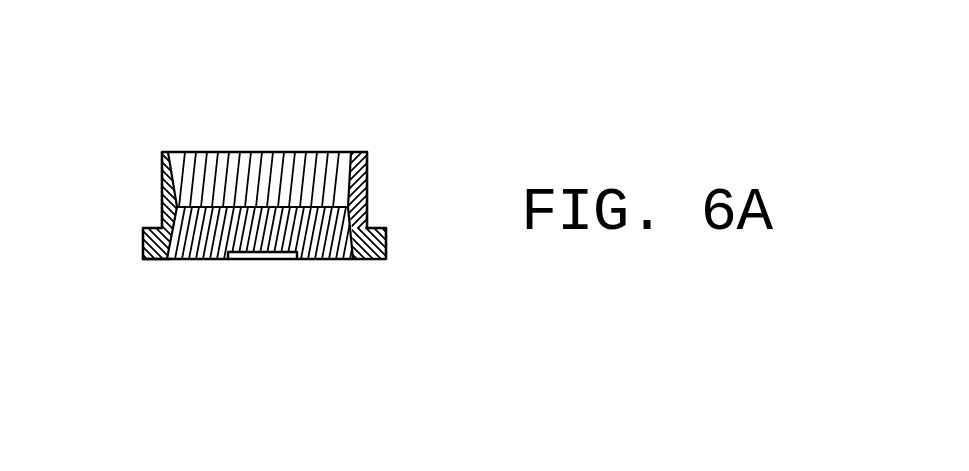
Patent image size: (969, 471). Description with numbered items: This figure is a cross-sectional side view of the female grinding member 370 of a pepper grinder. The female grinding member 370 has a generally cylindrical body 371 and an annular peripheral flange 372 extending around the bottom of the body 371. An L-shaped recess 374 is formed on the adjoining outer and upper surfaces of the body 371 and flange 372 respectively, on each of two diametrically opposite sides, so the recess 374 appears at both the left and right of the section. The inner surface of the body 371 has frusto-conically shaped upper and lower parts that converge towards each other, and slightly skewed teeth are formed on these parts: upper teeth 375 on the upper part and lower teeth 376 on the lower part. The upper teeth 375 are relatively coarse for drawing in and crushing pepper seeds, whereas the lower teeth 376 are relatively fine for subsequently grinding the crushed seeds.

The female grinding member 370 is at (338, 179).
The body 371 is at (355, 181).
The annular peripheral flange 372 is at (155, 250).
The L-shaped recess 374 is at (162, 184).
The upper teeth 375 is at (258, 172).
The lower teeth 376 is at (253, 250).